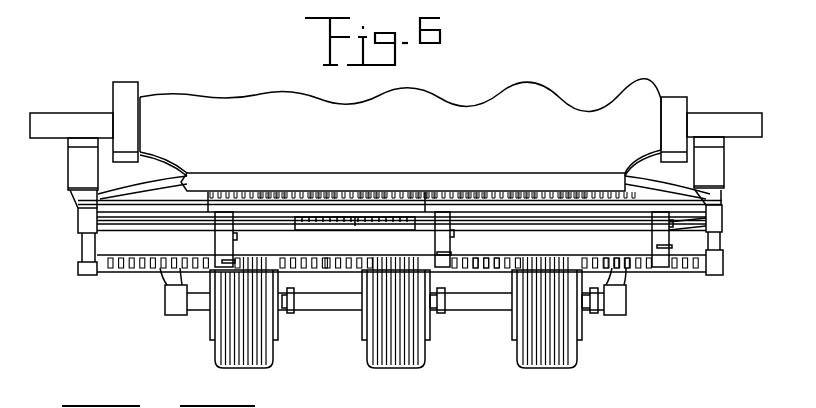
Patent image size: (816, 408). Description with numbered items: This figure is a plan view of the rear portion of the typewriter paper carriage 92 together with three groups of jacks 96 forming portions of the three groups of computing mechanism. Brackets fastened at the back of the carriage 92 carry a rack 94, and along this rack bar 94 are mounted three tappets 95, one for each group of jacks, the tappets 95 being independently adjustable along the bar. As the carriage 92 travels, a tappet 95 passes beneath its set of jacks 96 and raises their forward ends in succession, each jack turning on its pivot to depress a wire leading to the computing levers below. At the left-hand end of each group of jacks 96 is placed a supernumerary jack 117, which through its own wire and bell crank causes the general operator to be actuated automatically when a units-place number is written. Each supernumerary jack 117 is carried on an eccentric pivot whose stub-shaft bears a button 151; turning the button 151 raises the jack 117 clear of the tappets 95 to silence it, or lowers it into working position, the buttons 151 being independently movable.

The carriage 92 is at (123, 100).
The rack 94 is at (118, 269).
The tappet 95 is at (228, 262).
The jacks 96 is at (248, 366).
The supernumerary jack 117 is at (266, 354).
The button 151 is at (291, 313).